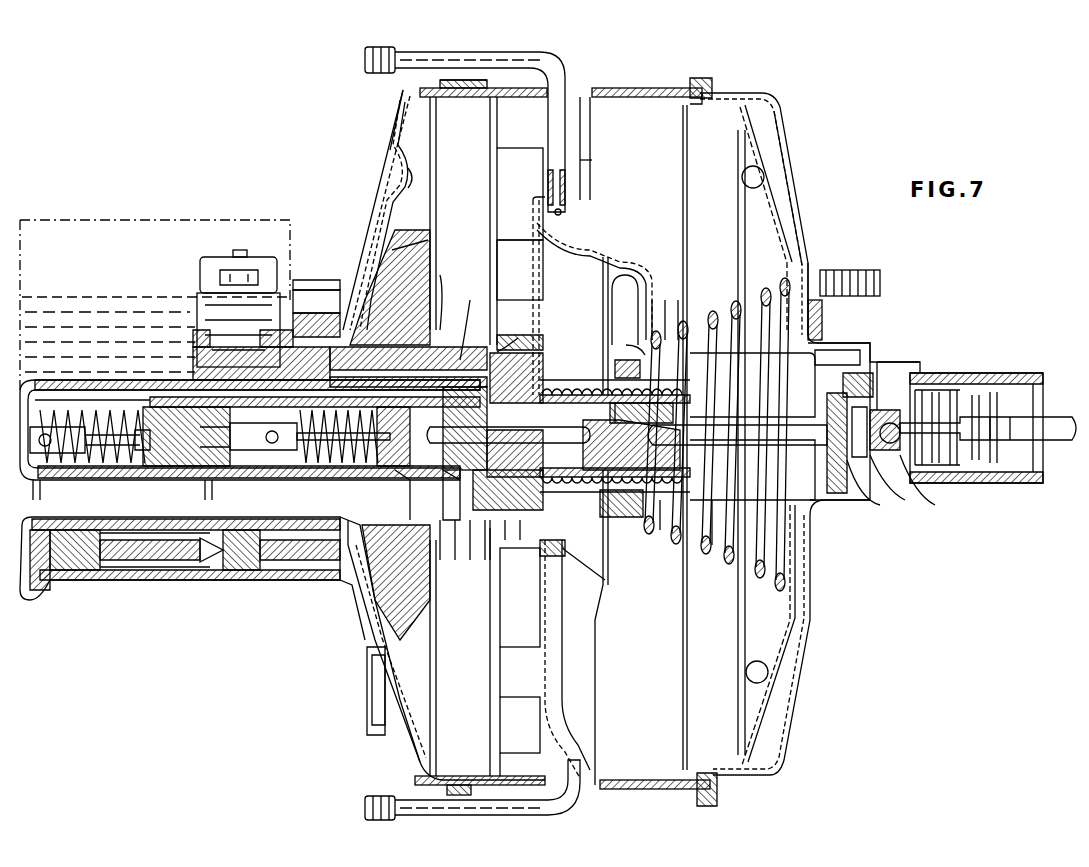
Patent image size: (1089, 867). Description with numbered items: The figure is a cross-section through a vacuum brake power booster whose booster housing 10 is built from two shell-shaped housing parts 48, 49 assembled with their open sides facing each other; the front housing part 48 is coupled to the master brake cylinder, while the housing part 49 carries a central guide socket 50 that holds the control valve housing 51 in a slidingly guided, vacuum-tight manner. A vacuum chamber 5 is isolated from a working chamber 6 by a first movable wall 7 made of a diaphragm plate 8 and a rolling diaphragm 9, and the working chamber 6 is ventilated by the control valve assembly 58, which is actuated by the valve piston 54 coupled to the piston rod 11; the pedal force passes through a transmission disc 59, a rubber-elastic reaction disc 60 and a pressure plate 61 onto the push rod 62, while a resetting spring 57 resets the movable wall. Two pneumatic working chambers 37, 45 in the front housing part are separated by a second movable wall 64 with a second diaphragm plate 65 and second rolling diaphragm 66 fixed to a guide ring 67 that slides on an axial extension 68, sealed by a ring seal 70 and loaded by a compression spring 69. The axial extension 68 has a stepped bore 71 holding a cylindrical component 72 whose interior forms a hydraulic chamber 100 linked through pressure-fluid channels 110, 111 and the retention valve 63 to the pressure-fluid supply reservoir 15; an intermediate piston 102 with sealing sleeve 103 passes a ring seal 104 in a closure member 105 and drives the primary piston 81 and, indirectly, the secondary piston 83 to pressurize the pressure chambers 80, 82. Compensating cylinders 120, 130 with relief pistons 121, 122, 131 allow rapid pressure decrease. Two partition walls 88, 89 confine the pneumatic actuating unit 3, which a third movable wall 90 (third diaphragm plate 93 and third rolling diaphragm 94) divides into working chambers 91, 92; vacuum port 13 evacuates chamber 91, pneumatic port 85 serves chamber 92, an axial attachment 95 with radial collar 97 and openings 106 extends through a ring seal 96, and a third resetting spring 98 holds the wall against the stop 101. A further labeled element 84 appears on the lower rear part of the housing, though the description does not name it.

The pneumatic actuating unit 3 is at (640, 225).
The vacuum chamber 5 is at (600, 441).
The working chamber 6 is at (772, 146).
The first movable wall 7 is at (775, 178).
The diaphragm plate 8 is at (752, 178).
The rolling diaphragm 9 is at (700, 100).
The booster housing 10 is at (812, 110).
The piston rod 11 is at (1060, 442).
The vacuum port 13 is at (410, 803).
The pressure-fluid supply reservoir 15 is at (112, 218).
The first pneumatic working chamber 37 is at (446, 436).
The pneumatic working chamber 45 is at (358, 600).
The housing part 48 is at (403, 92).
The housing part 49 is at (803, 205).
The central guide socket 50 is at (838, 337).
The control valve housing 51 is at (945, 378).
The valve piston 54 is at (905, 478).
The resetting spring 57 is at (712, 555).
The control valve assembly 58 is at (900, 400).
The transmission disc 59 is at (886, 478).
The reaction disc 60 is at (858, 480).
The pressure plate 61 is at (832, 495).
The push rod 62 is at (768, 446).
The retention valve 63 is at (222, 265).
The second movable wall 64 is at (418, 170).
The second diaphragm plate 65 is at (395, 160).
The second rolling diaphragm 66 is at (456, 97).
The guide ring 67 is at (395, 270).
The axial extension 68 is at (447, 290).
The compression spring 69 is at (459, 551).
The ring seal 70 is at (395, 475).
The stepped bore 71 is at (519, 551).
The cylindrical component 72 is at (476, 551).
The pressure chamber 80 is at (305, 468).
The primary piston 81 is at (358, 468).
The pressure chamber 82 is at (118, 462).
The secondary piston 83 is at (186, 462).
The boot 84 is at (368, 650).
The pneumatic port 85 is at (372, 68).
The partition wall 88 is at (540, 258).
The second partition wall 89 is at (590, 160).
The third movable wall 90 is at (585, 575).
The pneumatic working chamber 91 is at (584, 326).
The pneumatic working chamber 92 is at (598, 218).
The third diaphragm plate 93 is at (608, 285).
The third rolling diaphragm 94 is at (570, 220).
The axial attachment 95 is at (697, 330).
The ring seal 96 is at (620, 350).
The radial collar 97 is at (715, 400).
The third resetting spring 98 is at (615, 485).
The hydraulic chamber 100 is at (552, 470).
The stop 101 is at (652, 305).
The intermediate piston 102 is at (540, 440).
The sealing sleeve 103 is at (664, 535).
The ring seal 104 is at (520, 330).
The closure member 105 is at (452, 475).
The openings 106 is at (690, 386).
The pressure-fluid channel 110 is at (508, 421).
The pressure-fluid channel 111 is at (469, 318).
The compensating cylinder 120 is at (125, 582).
The relief piston 121 is at (275, 556).
The relief piston 122 is at (175, 555).
The compensating cylinder 130 is at (311, 300).
The relief piston 131 is at (326, 320).